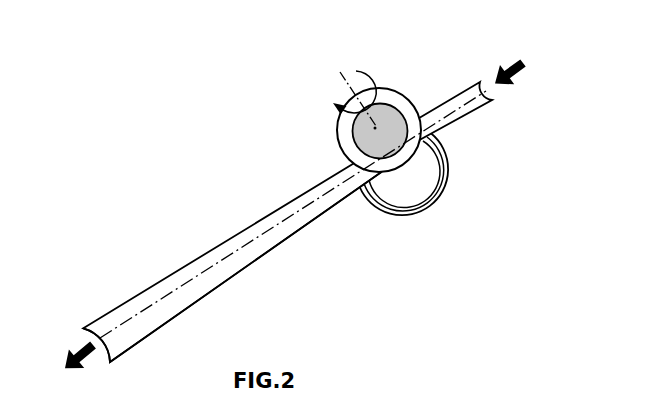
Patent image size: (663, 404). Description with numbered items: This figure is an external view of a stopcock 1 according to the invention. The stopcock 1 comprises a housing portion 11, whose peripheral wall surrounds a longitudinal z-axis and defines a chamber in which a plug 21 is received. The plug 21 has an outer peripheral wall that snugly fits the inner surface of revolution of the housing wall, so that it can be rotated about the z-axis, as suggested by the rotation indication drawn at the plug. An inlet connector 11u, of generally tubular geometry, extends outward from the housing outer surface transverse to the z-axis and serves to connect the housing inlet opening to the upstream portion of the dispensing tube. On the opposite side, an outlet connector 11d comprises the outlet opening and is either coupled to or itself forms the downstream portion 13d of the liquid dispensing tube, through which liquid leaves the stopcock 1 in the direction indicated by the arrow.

The stopcock 1 is at (337, 121).
The plug 21 is at (387, 108).
The housing portion 11 is at (403, 195).
The inlet connector 11u is at (470, 108).
The outlet connector 11d is at (232, 262).
The downstream portion of the dispensing tube 13d is at (158, 285).